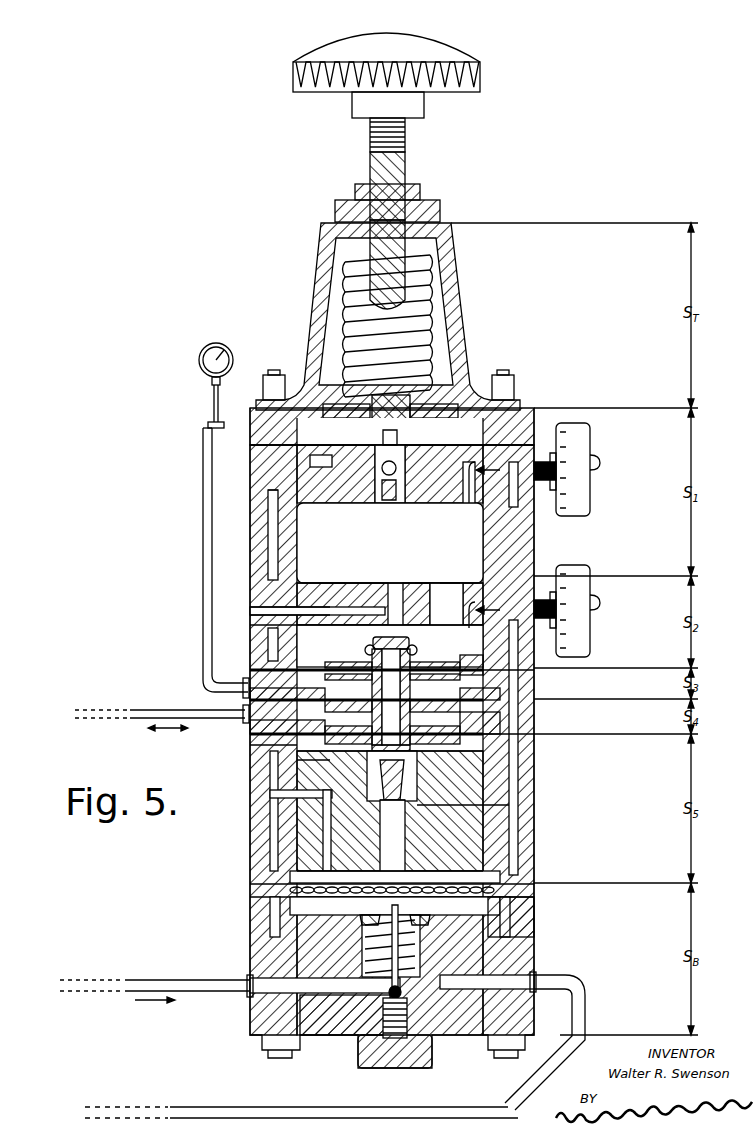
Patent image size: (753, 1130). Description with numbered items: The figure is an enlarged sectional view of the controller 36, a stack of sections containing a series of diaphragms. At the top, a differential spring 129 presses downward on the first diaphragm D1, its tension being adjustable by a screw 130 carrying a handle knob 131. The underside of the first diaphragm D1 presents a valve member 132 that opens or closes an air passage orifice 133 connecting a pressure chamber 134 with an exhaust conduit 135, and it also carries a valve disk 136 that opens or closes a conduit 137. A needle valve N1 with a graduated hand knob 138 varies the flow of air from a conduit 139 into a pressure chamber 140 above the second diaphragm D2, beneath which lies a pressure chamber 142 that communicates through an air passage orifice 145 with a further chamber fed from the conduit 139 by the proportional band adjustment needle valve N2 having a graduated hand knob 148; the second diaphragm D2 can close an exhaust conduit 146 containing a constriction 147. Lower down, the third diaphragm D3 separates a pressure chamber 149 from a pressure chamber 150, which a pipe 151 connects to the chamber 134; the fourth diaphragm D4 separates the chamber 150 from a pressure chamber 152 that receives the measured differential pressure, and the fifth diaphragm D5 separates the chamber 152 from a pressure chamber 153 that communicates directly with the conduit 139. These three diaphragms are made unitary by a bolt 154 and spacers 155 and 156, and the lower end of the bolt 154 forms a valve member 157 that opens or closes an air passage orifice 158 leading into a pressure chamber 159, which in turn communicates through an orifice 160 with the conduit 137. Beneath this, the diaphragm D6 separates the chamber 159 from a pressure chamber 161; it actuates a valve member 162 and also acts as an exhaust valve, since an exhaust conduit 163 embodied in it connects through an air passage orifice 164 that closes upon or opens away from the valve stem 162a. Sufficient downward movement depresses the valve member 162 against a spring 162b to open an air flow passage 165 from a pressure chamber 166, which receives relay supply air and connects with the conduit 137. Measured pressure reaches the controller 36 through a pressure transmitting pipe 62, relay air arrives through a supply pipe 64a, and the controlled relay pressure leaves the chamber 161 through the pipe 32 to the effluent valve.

The handle knob 131 is at (450, 46).
The screw 130 is at (406, 139).
The controller 36 is at (296, 245).
The valve disk 136 is at (468, 392).
The differential spring 129 is at (345, 320).
The valve member 132 is at (352, 430).
The first diaphragm D1 is at (306, 394).
The pressure chamber 134 is at (482, 432).
The pressure chamber 140 is at (390, 480).
The air passage orifice 133 is at (396, 478).
The conduit 137 is at (328, 460).
The needle valve N1 is at (478, 475).
The needle valve N2 is at (474, 622).
The bolt 154 is at (378, 652).
The pressure chamber 149 is at (410, 648).
The third diaphragm D3 is at (306, 668).
The spacer 155 is at (425, 664).
The fourth diaphragm D4 is at (328, 700).
The pressure chamber 150 is at (410, 692).
The fifth diaphragm D5 is at (318, 727).
The pressure chamber 152 is at (410, 712).
The spacer 156 is at (404, 750).
The air passage orifice 160 is at (300, 800).
The pressure chamber 159 is at (305, 877).
The exhaust conduit 163 is at (300, 900).
The valve member 162 is at (470, 945).
The pressure chamber 161 is at (360, 950).
The air flow passage 165 is at (405, 995).
The pressure chamber 166 is at (342, 1000).
The spring 162b is at (397, 1058).
The air passage orifice 164 is at (525, 905).
The graduated hand knob 138 is at (590, 440).
The graduated hand knob 148 is at (582, 570).
The conduit 139 is at (512, 535).
The pipe 151 is at (202, 549).
The exhaust conduit 135 is at (262, 485).
The exhaust conduit 146 is at (268, 602).
The air passage orifice 147 is at (268, 614).
The pressure chamber 142 is at (334, 590).
The air passage orifice 145 is at (425, 590).
The second diaphragm D2 is at (448, 585).
The pressure chamber 153 is at (265, 746).
The valve member 157 is at (295, 758).
The air passage orifice 158 is at (450, 806).
The diaphragm D6 is at (392, 870).
The valve stem 162a is at (485, 970).
The pressure transmitting pipe 62 is at (170, 708).
The supply pipe 64a is at (210, 995).
The pipe 32 is at (266, 1106).